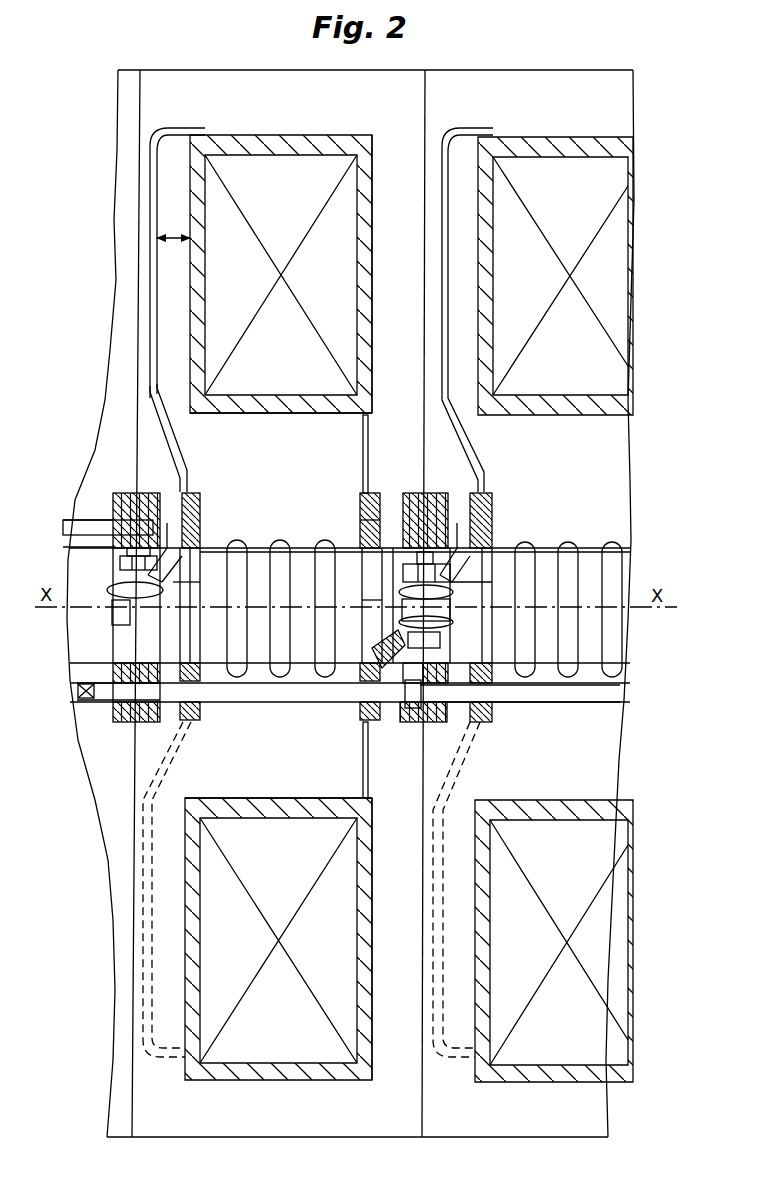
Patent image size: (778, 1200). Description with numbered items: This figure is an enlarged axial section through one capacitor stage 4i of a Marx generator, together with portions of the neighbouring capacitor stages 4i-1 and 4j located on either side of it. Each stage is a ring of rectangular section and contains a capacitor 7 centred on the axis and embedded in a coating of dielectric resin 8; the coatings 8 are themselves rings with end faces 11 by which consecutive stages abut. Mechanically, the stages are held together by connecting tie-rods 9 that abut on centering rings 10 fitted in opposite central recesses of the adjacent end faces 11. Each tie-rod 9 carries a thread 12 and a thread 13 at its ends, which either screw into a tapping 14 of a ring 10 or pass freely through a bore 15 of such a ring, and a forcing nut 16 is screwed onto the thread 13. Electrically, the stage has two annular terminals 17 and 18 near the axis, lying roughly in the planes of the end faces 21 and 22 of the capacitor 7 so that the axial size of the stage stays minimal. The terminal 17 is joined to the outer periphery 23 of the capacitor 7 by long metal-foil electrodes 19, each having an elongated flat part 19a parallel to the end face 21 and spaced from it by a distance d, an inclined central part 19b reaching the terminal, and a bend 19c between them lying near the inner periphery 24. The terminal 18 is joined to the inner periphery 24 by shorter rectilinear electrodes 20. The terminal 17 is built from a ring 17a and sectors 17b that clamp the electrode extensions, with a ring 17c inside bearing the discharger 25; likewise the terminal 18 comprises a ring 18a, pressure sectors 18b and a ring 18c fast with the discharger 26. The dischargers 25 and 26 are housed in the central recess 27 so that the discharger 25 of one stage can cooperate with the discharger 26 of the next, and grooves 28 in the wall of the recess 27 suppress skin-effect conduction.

The coating of dielectric resin 8 is at (128, 80).
The outer periphery 23 is at (225, 135).
The capacitor 7 is at (414, 610).
The inner periphery 24 is at (270, 417).
The end face 22 is at (375, 250).
The elongated flat part 19a is at (153, 200).
The inclined central part 19b is at (165, 447).
The bend 19c is at (165, 400).
The electrode 19 is at (452, 423).
The end face 21 is at (188, 295).
The end face 11 is at (140, 245).
The capacitor stage 4i-1 is at (125, 358).
The capacitor stage 4i is at (165, 892).
The capacitor stage 4j is at (600, 758).
The centering ring 10 is at (125, 492).
The connecting tie-rod 9 is at (70, 526).
The discharger 25 is at (125, 580).
The forcing nut 16 is at (118, 613).
The discharger 26 is at (450, 633).
The terminal 17 is at (203, 599).
The ring 17a is at (202, 513).
The sector 17b is at (184, 492).
The ring 17c is at (182, 664).
The terminal 18 is at (350, 571).
The ring 18a is at (359, 522).
The pressure sector 18b is at (378, 492).
The ring 18c is at (378, 562).
The electrode 20 is at (363, 468).
The central recess 27 is at (350, 625).
The groove 28 is at (243, 572).
The thread 12 is at (138, 682).
The tapping 14 is at (125, 733).
The bore 15 is at (425, 724).
The thread 13 is at (455, 730).